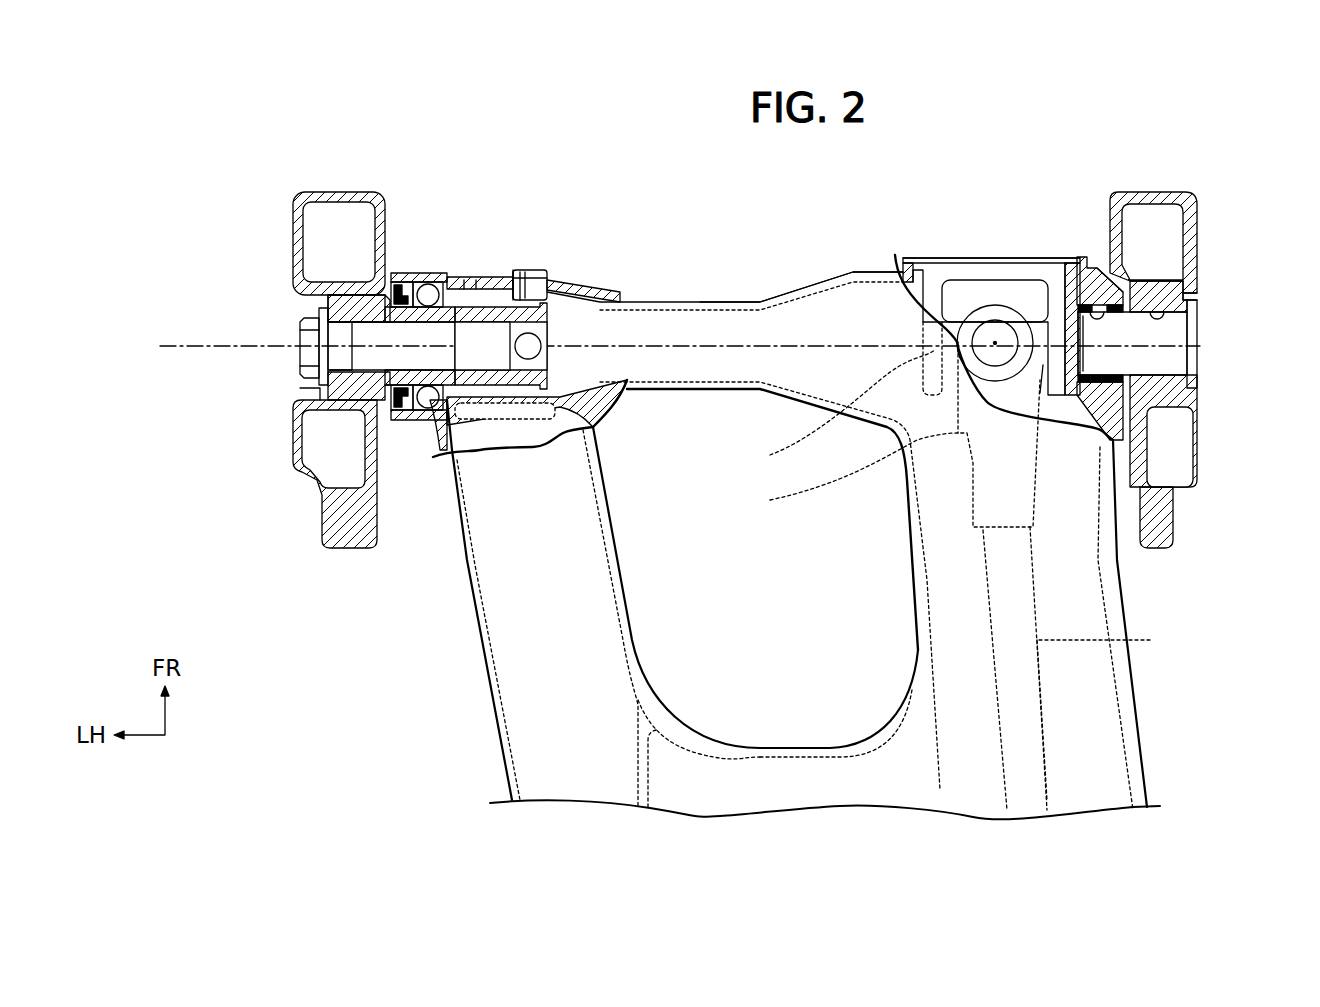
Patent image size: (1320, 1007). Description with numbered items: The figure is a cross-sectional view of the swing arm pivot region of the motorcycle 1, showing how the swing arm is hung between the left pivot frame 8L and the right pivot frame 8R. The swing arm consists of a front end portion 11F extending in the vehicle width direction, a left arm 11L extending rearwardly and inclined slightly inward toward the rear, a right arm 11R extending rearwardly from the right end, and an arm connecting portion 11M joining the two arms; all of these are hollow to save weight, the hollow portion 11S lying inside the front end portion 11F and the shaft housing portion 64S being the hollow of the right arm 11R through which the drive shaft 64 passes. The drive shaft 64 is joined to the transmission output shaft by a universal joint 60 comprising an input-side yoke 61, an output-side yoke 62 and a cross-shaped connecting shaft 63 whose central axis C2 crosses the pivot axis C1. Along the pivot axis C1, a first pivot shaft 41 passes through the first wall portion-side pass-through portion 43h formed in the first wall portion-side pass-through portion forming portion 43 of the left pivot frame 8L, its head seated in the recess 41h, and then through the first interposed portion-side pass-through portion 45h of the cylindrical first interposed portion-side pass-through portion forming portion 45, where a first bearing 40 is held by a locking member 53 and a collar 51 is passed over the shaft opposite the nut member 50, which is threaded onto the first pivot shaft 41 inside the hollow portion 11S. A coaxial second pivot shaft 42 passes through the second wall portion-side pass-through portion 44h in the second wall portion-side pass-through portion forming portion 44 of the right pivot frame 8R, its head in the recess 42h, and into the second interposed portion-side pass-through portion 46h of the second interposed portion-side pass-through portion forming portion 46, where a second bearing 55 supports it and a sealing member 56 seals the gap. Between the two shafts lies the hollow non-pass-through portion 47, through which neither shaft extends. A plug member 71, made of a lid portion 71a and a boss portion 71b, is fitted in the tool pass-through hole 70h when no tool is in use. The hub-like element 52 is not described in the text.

The motorcycle 1 is at (97, 170).
The left pivot frame 8L is at (338, 520).
The right pivot frame 8R is at (1172, 515).
The front end portion 11F is at (598, 276).
The left arm 11L is at (478, 665).
The arm connecting portion 11M is at (779, 747).
The right arm 11R is at (1122, 688).
The hollow portion 11S is at (638, 338).
The first bearing 40 is at (434, 268).
The first pivot shaft 41 is at (287, 320).
The recess 41h is at (312, 390).
The second pivot shaft 42 is at (1209, 322).
The recess 42h is at (1197, 296).
The first wall portion-side pass-through portion forming portion 43 is at (345, 352).
The first wall portion-side pass-through portion 43h is at (354, 328).
The second wall portion-side pass-through portion forming portion 44 is at (1172, 373).
The second wall portion-side pass-through portion 44h is at (1157, 312).
The first interposed portion-side pass-through portion forming portion 45 is at (424, 278).
The first interposed portion-side pass-through portion 45h is at (470, 292).
The second interposed portion-side pass-through portion forming portion 46 is at (1125, 282).
The second interposed portion-side pass-through portion 46h is at (1103, 287).
The non-pass-through portion 47 is at (745, 330).
The nut member 50 is at (560, 313).
The collar 51 is at (373, 423).
The hub 52 is at (375, 288).
The locking member 53 is at (385, 410).
The second bearing 55 is at (1130, 404).
The sealing member 56 is at (1105, 402).
The universal joint 60 is at (727, 437).
The input-side yoke 61 is at (834, 410).
The output-side yoke 62 is at (890, 566).
The connecting shaft 63 is at (1043, 365).
The drive shaft 64 is at (1112, 635).
The shaft housing portion 64S is at (1091, 736).
The tool pass-through hole 70h is at (535, 285).
The plug member 71 is at (575, 103).
The lid portion 71a is at (514, 272).
The boss portion 71b is at (525, 272).
The pivot axis C1 is at (162, 346).
The central axis C2 is at (995, 343).